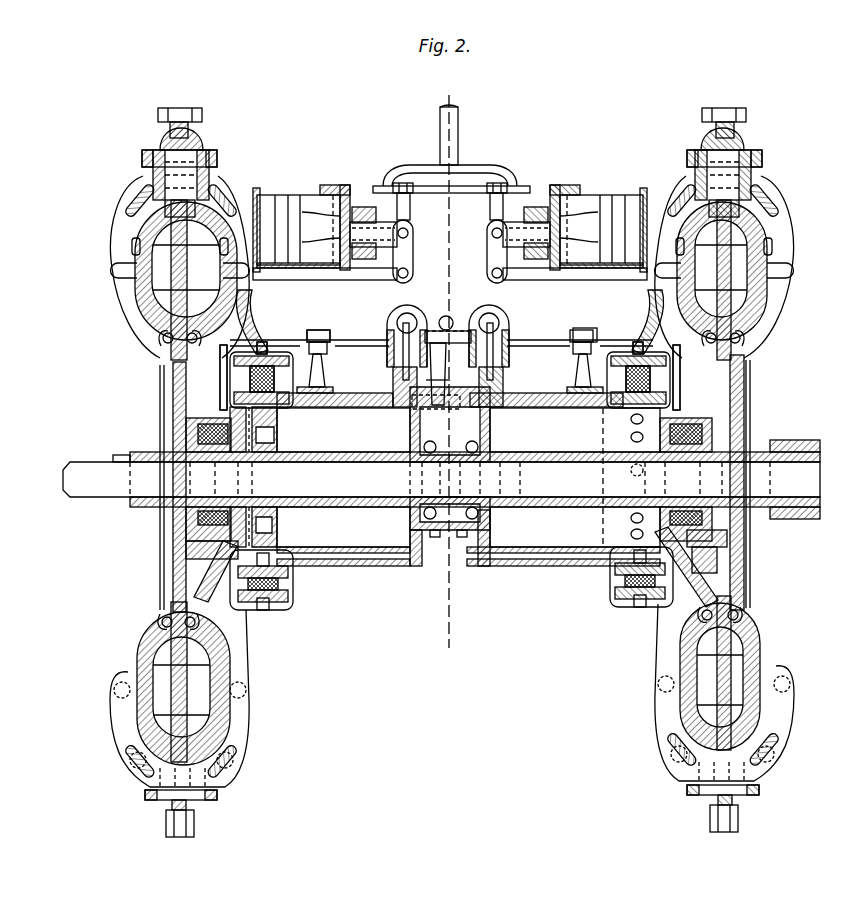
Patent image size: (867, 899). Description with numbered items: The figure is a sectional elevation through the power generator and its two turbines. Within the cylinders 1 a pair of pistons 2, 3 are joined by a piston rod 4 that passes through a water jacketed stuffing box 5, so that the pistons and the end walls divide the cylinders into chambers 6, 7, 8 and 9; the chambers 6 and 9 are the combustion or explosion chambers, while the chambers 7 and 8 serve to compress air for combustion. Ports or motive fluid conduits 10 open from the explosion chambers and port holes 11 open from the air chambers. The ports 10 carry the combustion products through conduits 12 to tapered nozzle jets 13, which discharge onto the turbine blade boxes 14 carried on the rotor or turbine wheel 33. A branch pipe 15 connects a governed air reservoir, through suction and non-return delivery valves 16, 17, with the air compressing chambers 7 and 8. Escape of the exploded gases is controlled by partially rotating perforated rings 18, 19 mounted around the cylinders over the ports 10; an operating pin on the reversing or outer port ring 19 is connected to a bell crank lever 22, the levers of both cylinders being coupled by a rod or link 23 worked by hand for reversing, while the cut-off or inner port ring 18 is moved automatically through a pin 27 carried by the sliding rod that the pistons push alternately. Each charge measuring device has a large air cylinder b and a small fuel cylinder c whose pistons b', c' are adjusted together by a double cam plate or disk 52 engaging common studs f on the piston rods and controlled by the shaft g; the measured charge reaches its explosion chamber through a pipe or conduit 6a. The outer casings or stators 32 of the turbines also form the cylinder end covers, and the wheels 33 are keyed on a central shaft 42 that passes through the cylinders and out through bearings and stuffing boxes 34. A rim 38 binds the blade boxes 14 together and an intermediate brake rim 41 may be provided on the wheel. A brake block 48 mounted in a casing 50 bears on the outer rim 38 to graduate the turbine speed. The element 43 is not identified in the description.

The cylinder 1 is at (572, 535).
The piston 2 is at (265, 555).
The piston 3 is at (520, 590).
The piston rod 4 is at (348, 540).
The water jacketed stuffing box 5 is at (450, 532).
The combustion or explosion chamber 6 is at (175, 560).
The pipe or conduit 6a is at (160, 362).
The air compressing chamber 7 is at (343, 430).
The air compressing chamber 8 is at (484, 568).
The combustion or explosion chamber 9 is at (575, 477).
The port or motive fluid conduit 10 is at (230, 396).
The port hole 11 is at (375, 395).
The conduit 12 is at (238, 205).
The tapered nozzle jet 13 is at (128, 265).
The turbine blade box 14 is at (150, 280).
The branch pipe 15 is at (446, 316).
The suction valve 16 is at (442, 380).
The non-return delivery valve 17 is at (392, 330).
The cut-off or inner port ring 18 is at (248, 375).
The reversing or outer port ring 19 is at (270, 356).
The bell crank lever 22 is at (322, 330).
The rod or link 23 is at (560, 350).
The pin 27 is at (410, 402).
The outer casing or stator 32 is at (165, 338).
The rotor or turbine wheel 33 is at (195, 430).
The bearings and stuffing boxes 34 is at (760, 455).
The brake rim 38 is at (762, 190).
The intermediate brake rim 41 is at (215, 563).
The central shaft 42 is at (441, 479).
The pivot balls 43 is at (700, 622).
The brake block 48 is at (195, 150).
The casing 50 is at (150, 160).
The double cam plate or disk 52 is at (475, 196).
The air measuring cylinder b is at (450, 219).
The air measuring piston b' is at (450, 213).
The fuel measuring cylinder c is at (450, 264).
The fuel measuring piston c' is at (449, 315).
The stud f is at (397, 212).
The shaft g is at (458, 131).